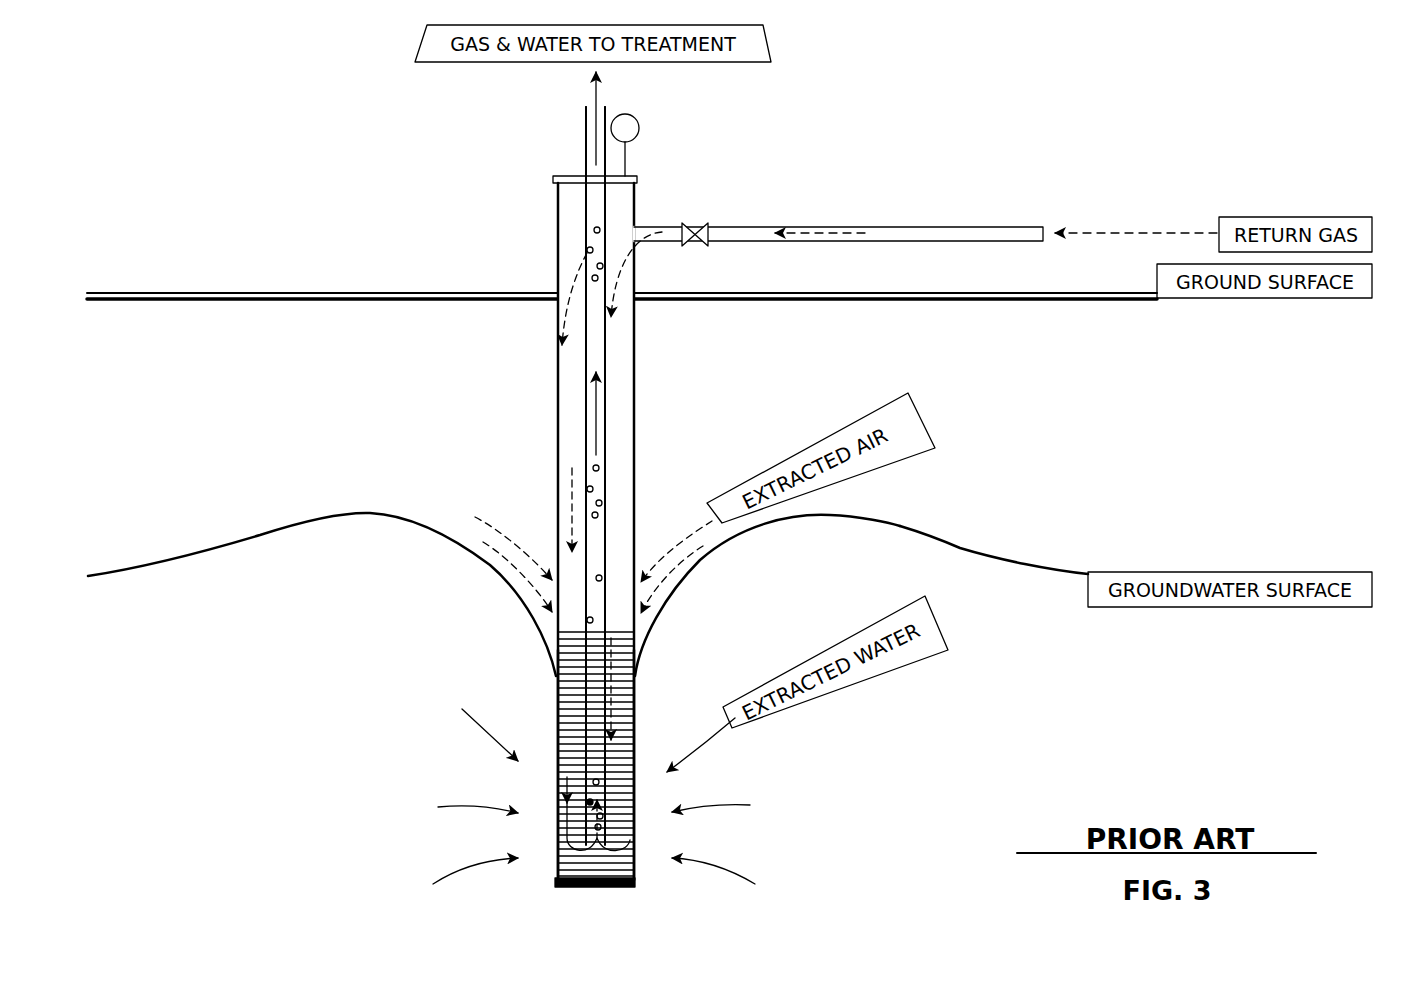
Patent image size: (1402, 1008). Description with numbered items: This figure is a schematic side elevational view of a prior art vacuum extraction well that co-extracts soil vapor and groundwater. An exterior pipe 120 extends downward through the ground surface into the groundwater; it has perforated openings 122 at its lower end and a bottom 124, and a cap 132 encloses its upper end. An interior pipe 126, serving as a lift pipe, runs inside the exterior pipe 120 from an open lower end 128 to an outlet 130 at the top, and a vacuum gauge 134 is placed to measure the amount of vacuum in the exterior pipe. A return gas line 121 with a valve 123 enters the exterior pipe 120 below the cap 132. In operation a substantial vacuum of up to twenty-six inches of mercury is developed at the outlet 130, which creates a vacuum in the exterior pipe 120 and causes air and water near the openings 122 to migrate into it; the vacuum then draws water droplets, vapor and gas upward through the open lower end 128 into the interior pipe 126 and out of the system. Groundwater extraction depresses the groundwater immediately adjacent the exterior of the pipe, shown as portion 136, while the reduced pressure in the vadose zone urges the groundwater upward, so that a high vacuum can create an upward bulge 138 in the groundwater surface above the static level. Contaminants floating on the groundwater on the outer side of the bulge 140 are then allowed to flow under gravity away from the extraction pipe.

The exterior pipe 120 is at (636, 413).
The return gas line 121 is at (786, 243).
The perforated openings 122 is at (637, 717).
The valve 123 is at (690, 224).
The bottom 124 is at (612, 888).
The interior pipe 126 is at (585, 212).
The open lower end 128 is at (632, 851).
The outlet 130 is at (608, 108).
The cap 132 is at (640, 176).
The vacuum gauge 134 is at (639, 123).
The depressed groundwater portion 136 is at (641, 653).
The upward bulge 138 is at (777, 521).
The outer side of the bulge 140 is at (1015, 568).